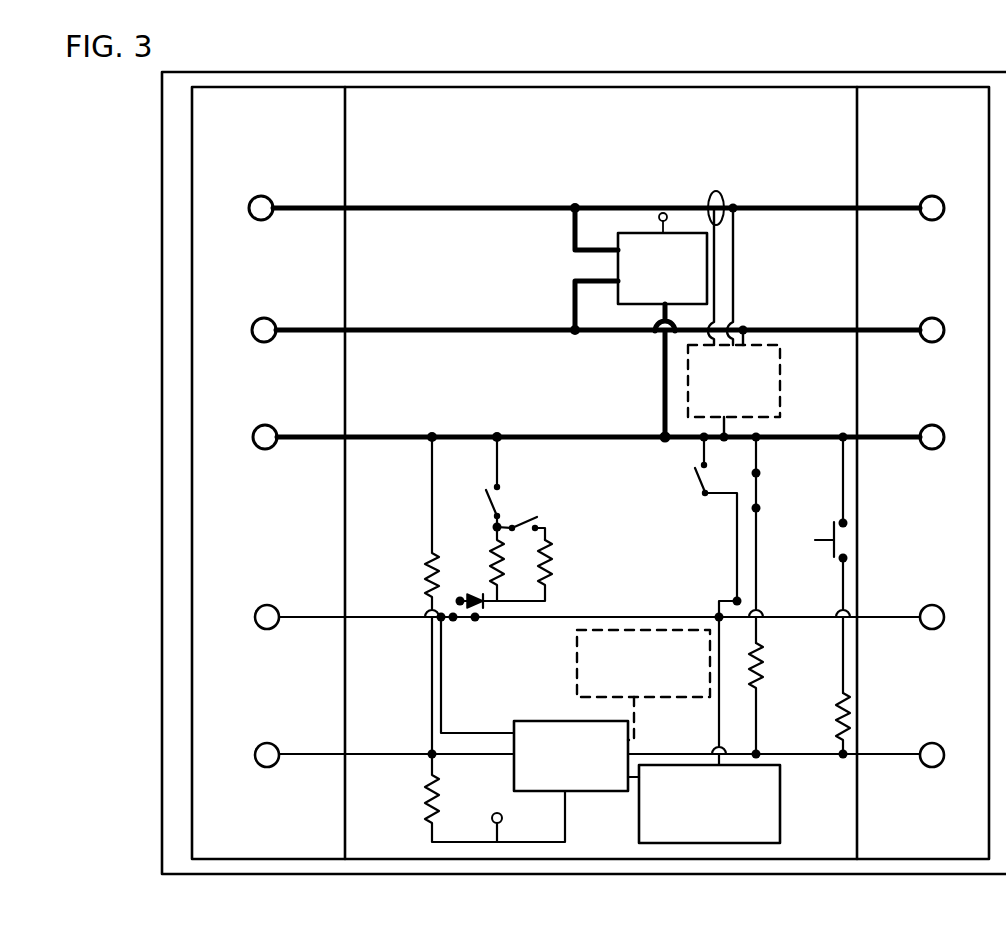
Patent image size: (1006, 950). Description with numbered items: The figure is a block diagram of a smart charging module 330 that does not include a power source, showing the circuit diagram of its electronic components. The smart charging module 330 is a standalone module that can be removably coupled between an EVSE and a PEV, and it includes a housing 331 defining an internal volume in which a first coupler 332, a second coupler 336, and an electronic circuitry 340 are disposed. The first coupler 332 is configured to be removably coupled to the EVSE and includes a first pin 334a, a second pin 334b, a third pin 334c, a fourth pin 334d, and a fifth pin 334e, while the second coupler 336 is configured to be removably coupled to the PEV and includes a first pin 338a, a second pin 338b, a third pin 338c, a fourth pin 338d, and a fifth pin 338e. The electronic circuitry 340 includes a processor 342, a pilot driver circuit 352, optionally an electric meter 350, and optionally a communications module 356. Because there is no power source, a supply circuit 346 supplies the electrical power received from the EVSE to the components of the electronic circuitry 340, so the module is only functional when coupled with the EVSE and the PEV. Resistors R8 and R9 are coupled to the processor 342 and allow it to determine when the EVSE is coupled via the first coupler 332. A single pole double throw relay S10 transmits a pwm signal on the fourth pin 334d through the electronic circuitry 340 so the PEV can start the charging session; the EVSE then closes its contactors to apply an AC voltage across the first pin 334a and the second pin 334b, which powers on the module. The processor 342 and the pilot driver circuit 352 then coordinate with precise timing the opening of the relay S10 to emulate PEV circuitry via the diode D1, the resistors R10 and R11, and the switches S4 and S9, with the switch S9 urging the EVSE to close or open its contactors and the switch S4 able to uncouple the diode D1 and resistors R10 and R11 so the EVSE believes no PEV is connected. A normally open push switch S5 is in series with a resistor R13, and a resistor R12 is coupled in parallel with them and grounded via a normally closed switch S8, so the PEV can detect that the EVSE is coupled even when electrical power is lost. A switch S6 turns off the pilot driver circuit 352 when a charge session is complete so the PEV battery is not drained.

The smart charging module 330 is at (803, 60).
The housing 331 is at (162, 229).
The first coupler 332 is at (265, 430).
The first pin 334a is at (253, 199).
The second pin 334b is at (258, 319).
The third pin 334c is at (259, 426).
The fourth pin 334d is at (262, 606).
The fifth pin 334e is at (262, 744).
The second coupler 336 is at (933, 429).
The first pin 338a is at (957, 192).
The second pin 338b is at (940, 319).
The third pin 338c is at (940, 426).
The fourth pin 338d is at (940, 606).
The fifth pin 338e is at (940, 744).
The electronic circuitry 340 is at (596, 473).
The processor 342 is at (576, 756).
The supply circuit 346 is at (641, 322).
The electric meter 350 is at (734, 314).
The pilot driver circuit 352 is at (709, 804).
The communications module 356 is at (643, 683).
The switch S4 is at (480, 484).
The normally open switch S5 is at (825, 565).
The switch S6 is at (718, 601).
The normally closed switch S8 is at (768, 540).
The switch S9 is at (521, 523).
The single pole double throw relay S10 is at (477, 673).
The resistor R8 is at (478, 798).
The resistor R9 is at (416, 595).
The resistor R10 is at (490, 553).
The resistor R11 is at (546, 592).
The resistor R12 is at (774, 698).
The resistor R13 is at (822, 723).
The diode D1 is at (476, 590).